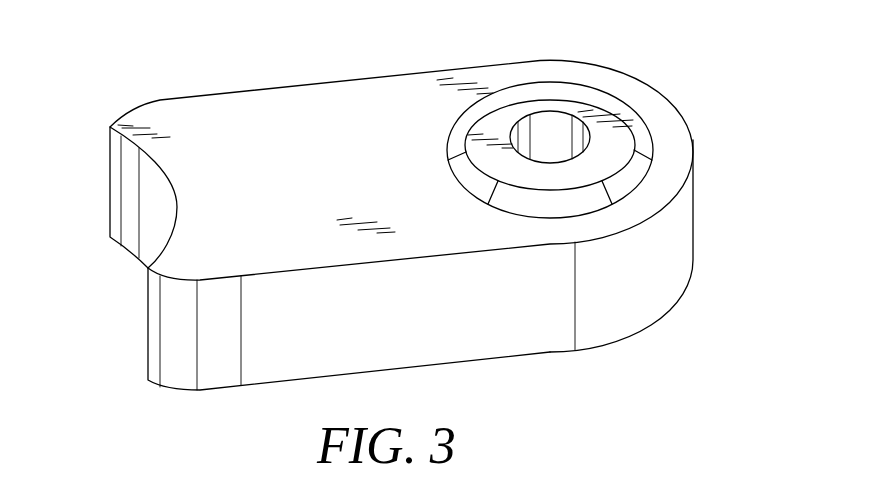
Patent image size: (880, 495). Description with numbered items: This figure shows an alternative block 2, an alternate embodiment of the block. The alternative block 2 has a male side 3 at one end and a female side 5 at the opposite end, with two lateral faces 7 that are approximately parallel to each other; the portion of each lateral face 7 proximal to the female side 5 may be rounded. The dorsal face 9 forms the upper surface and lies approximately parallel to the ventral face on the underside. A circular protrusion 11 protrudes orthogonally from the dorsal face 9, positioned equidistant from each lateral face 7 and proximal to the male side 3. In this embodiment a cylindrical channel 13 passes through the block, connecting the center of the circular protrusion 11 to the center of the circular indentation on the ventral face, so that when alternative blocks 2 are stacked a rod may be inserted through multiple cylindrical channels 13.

The alternative block 2 is at (95, 86).
The male side 3 is at (695, 193).
The female side 5 is at (163, 193).
The lateral face 7 is at (458, 327).
The dorsal face 9 is at (260, 137).
The circular protrusion 11 is at (562, 105).
The cylindrical channel 13 is at (550, 127).